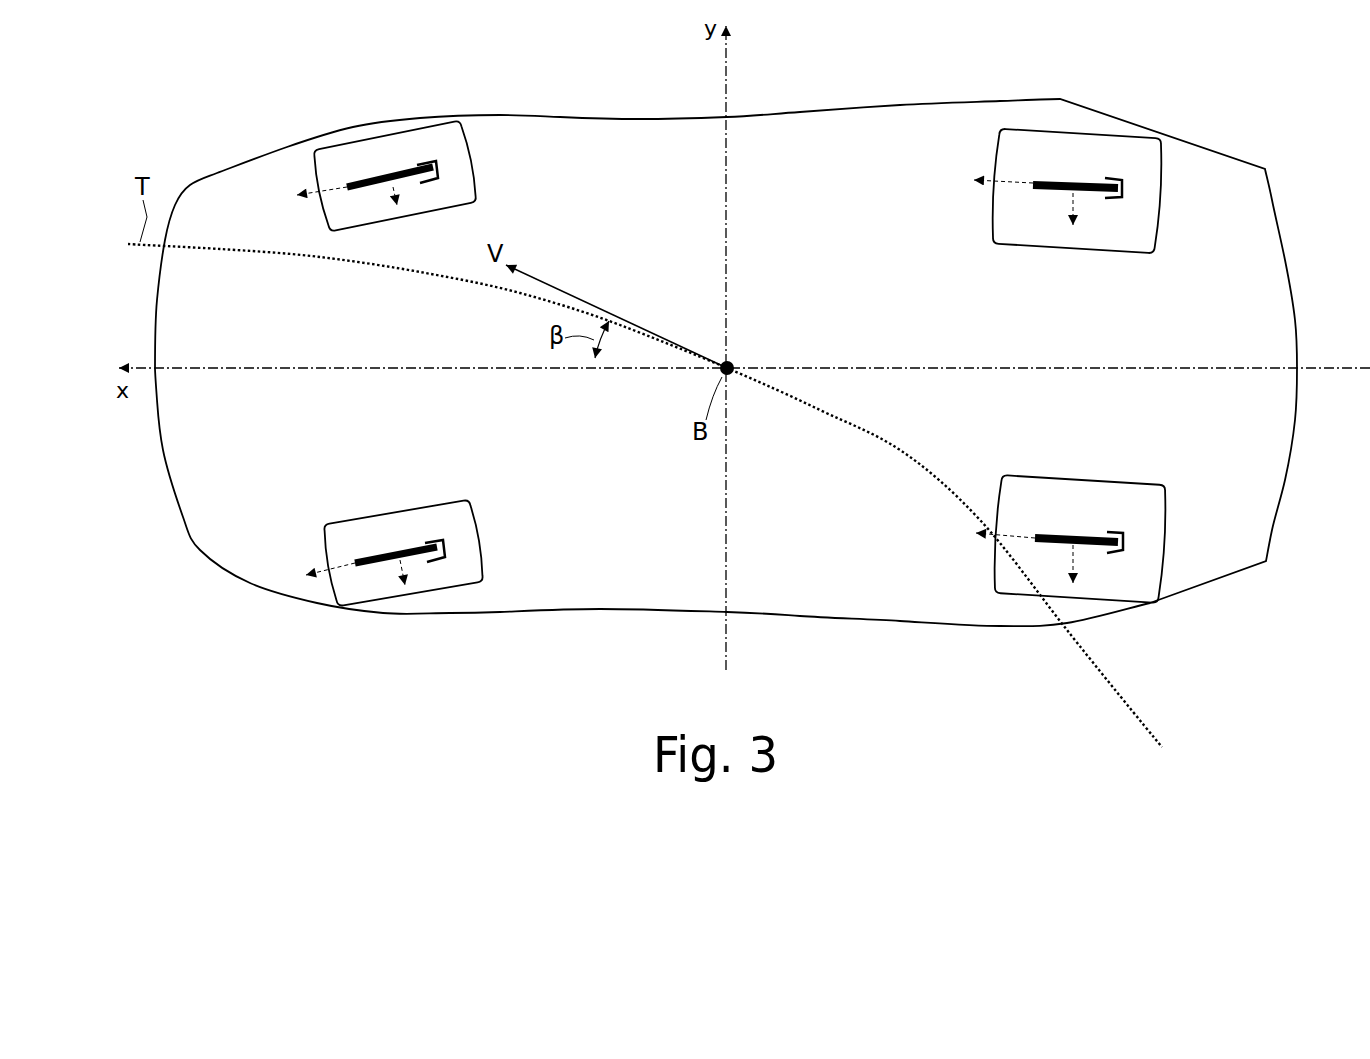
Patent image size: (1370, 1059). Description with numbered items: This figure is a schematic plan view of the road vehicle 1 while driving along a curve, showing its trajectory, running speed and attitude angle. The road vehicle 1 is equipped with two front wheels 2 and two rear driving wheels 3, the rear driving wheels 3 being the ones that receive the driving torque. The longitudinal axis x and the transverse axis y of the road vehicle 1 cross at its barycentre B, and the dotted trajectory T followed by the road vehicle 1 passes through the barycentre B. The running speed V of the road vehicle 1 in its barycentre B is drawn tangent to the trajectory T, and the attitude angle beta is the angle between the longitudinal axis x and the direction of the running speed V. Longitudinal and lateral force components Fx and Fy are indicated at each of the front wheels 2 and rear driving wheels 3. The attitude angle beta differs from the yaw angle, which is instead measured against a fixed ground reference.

The road vehicle 1 is at (1246, 654).
The front wheels 2 is at (463, 143).
The rear driving wheels 3 is at (1150, 148).